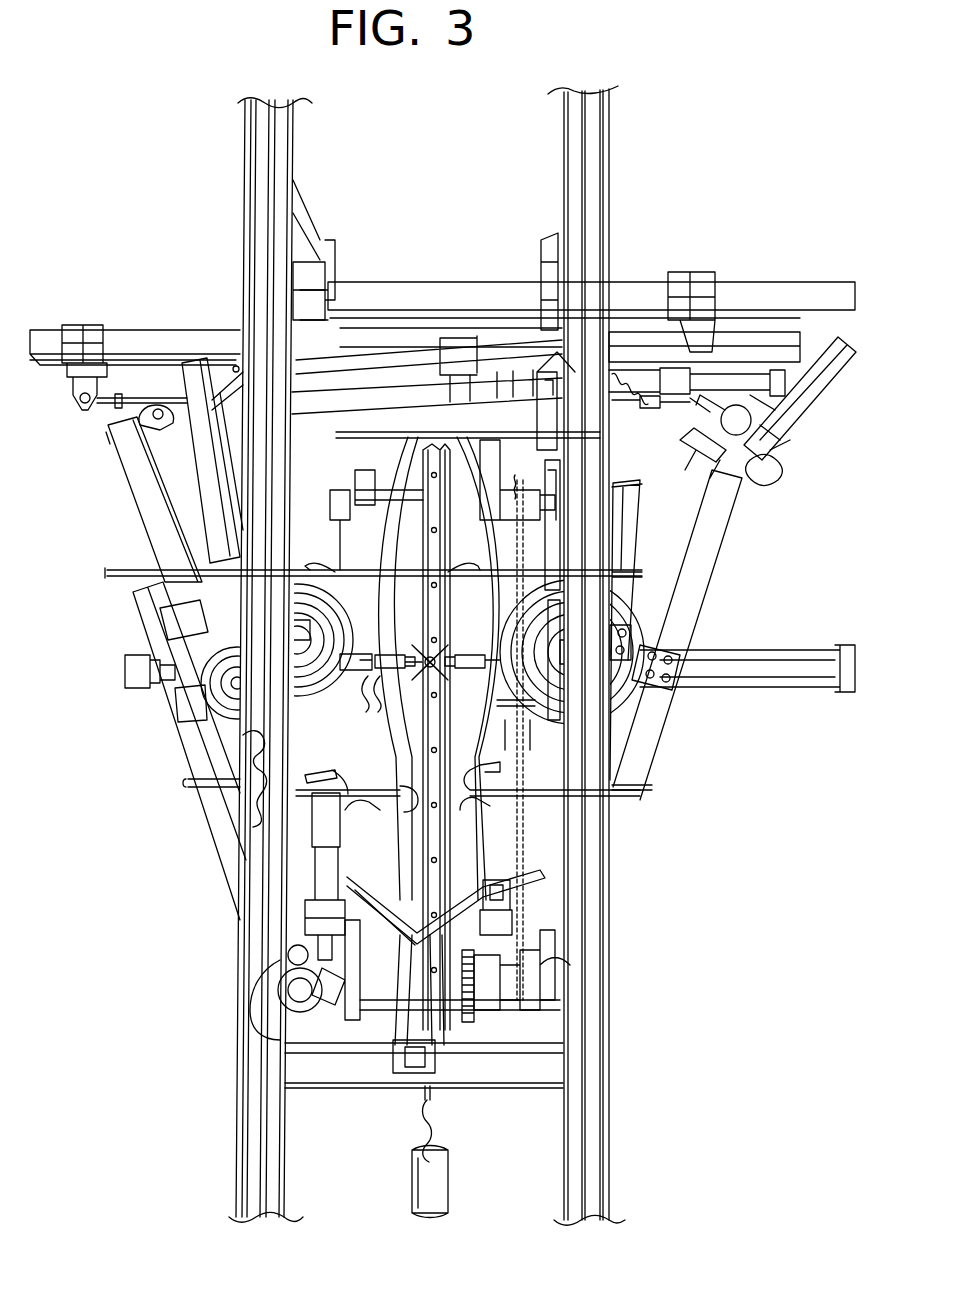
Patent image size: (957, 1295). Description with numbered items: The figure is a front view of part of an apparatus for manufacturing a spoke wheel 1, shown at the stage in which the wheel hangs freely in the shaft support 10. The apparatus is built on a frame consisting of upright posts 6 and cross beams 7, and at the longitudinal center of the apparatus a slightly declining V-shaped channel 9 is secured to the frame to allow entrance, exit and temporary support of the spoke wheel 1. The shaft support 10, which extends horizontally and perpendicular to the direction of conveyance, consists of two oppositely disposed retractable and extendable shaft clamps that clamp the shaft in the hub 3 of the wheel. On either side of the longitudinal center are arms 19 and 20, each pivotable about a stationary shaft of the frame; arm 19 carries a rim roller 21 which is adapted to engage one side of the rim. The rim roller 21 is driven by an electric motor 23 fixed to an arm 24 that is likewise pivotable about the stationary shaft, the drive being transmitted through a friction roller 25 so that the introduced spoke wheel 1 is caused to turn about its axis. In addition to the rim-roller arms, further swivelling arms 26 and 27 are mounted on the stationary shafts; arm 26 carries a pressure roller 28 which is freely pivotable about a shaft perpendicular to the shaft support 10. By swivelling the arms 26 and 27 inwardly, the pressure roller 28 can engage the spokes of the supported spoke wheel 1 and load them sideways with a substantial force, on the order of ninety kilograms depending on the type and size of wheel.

The spoke wheel 1 is at (417, 470).
The shaft and hub 3 is at (410, 699).
The posts 6 is at (242, 1112).
The cross beams 7 is at (300, 1064).
The V-shaped channel 9 is at (486, 890).
The shaft support 10 is at (363, 696).
The arm 19 is at (200, 528).
The arm 20 is at (633, 533).
The rim roller 21 is at (290, 606).
The electric motor 23 is at (235, 698).
The arm 24 is at (173, 743).
The friction roller 25 is at (190, 764).
The swivelling arm 26 is at (193, 531).
The swivelling arm 27 is at (733, 507).
The pressure roller 28 is at (306, 565).